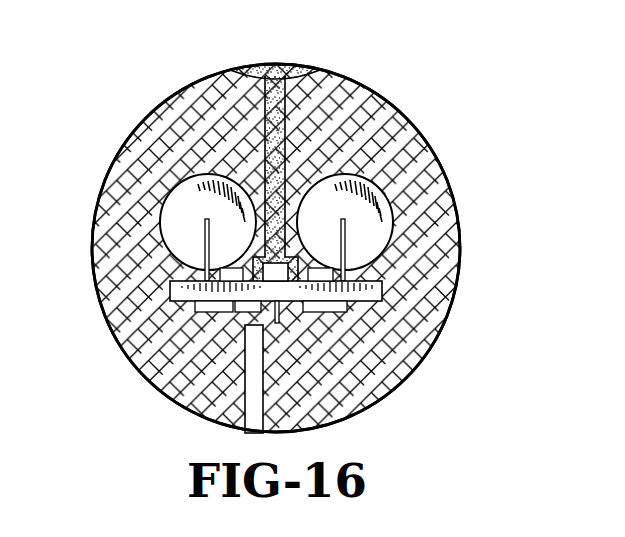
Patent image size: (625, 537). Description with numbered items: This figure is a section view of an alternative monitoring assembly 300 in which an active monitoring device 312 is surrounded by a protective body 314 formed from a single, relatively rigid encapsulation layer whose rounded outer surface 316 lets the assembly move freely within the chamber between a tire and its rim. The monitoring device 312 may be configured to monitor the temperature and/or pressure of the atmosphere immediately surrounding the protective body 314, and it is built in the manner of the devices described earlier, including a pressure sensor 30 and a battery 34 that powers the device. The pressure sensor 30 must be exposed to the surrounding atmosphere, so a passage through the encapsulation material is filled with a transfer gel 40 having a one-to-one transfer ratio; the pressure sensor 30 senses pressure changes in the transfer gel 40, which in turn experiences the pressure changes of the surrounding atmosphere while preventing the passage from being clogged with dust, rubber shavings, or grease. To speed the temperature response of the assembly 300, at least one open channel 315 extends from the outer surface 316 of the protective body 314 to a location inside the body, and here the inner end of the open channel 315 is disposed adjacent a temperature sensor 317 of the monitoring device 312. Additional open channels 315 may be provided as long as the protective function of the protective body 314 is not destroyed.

The monitoring assembly 300 is at (457, 125).
The protective body 314 is at (139, 137).
The outer surface 316 is at (412, 373).
The battery 34 is at (175, 208).
The transfer gel 40 is at (275, 75).
The pressure sensor 30 is at (282, 268).
The monitoring device 312 is at (389, 284).
The temperature sensor 317 is at (252, 308).
The open channel 315 is at (253, 397).